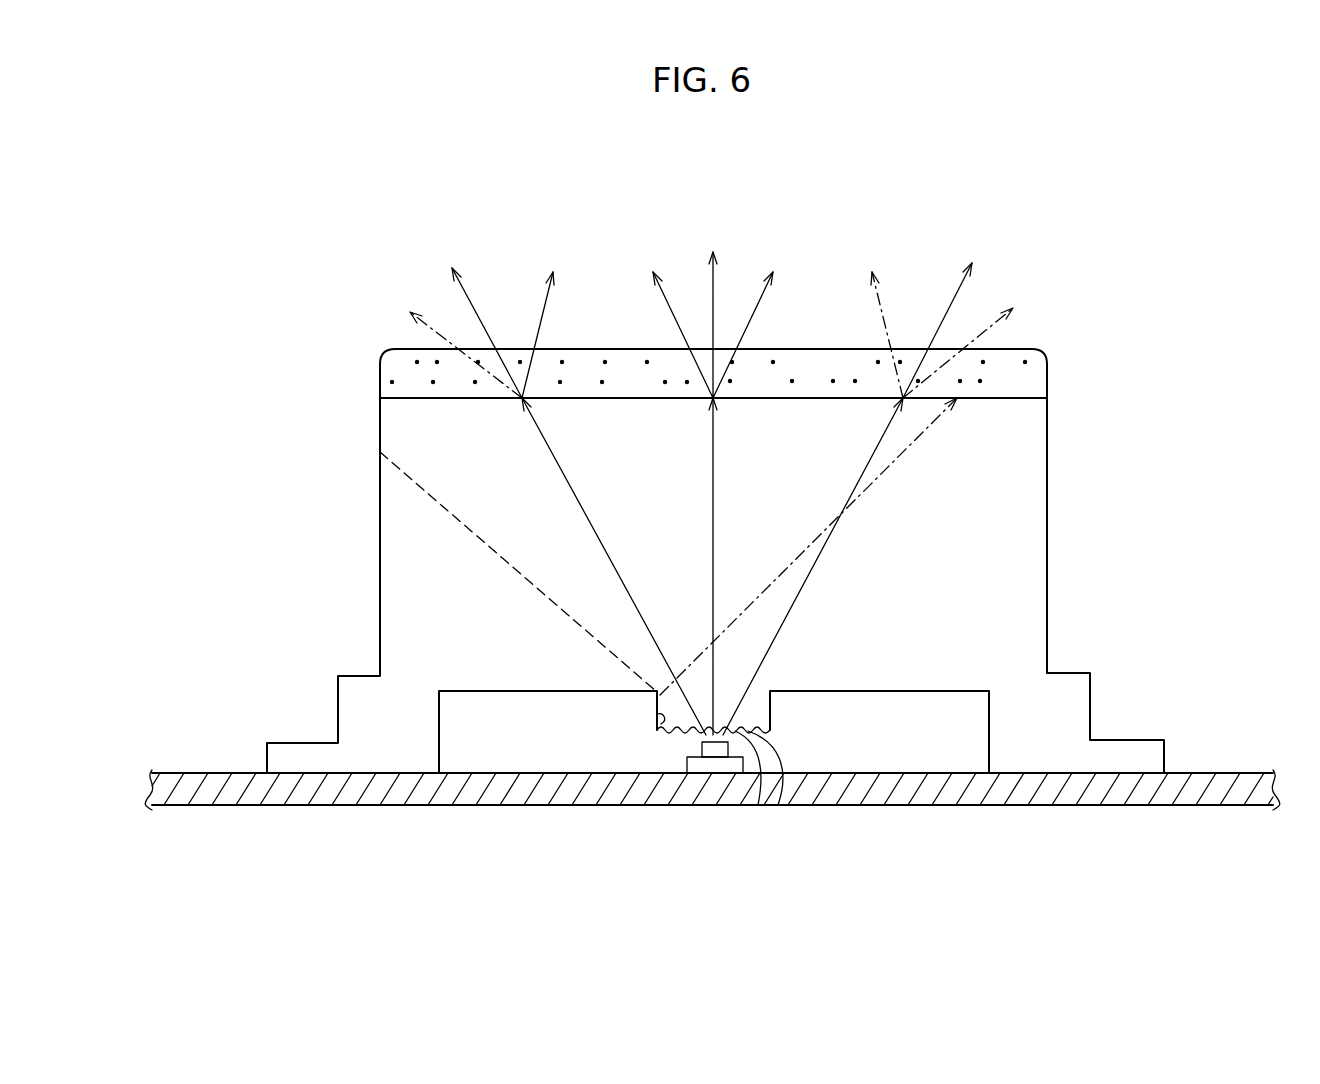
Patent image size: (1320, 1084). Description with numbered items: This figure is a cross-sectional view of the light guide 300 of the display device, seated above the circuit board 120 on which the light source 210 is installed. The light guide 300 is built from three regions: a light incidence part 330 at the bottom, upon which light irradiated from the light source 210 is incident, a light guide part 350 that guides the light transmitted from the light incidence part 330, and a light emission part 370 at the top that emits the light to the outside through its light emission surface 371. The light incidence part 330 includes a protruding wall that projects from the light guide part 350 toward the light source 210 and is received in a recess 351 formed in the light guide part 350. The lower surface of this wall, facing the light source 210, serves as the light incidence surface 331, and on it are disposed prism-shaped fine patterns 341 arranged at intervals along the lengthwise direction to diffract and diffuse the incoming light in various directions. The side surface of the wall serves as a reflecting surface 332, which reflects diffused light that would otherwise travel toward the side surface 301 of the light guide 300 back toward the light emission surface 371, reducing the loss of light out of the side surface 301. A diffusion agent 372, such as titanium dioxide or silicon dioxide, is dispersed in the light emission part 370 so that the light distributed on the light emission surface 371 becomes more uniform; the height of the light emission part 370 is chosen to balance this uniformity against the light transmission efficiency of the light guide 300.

The circuit board 120 is at (190, 805).
The light guide 300 is at (709, 574).
The side surface 301 is at (380, 578).
The light emission part 370 is at (395, 368).
The light emission surface 371 is at (815, 348).
The diffusion agent 372 is at (666, 380).
The light guide part 350 is at (417, 493).
The recess 351 is at (468, 740).
The reflecting surface 332 is at (655, 715).
The light incidence part 330 is at (652, 740).
The light source 210 is at (710, 760).
The light incidence surface 331 is at (728, 773).
The prism-shaped fine patterns 341 is at (758, 805).